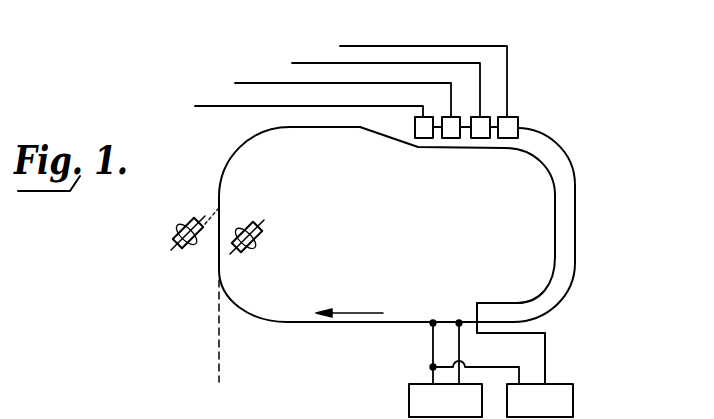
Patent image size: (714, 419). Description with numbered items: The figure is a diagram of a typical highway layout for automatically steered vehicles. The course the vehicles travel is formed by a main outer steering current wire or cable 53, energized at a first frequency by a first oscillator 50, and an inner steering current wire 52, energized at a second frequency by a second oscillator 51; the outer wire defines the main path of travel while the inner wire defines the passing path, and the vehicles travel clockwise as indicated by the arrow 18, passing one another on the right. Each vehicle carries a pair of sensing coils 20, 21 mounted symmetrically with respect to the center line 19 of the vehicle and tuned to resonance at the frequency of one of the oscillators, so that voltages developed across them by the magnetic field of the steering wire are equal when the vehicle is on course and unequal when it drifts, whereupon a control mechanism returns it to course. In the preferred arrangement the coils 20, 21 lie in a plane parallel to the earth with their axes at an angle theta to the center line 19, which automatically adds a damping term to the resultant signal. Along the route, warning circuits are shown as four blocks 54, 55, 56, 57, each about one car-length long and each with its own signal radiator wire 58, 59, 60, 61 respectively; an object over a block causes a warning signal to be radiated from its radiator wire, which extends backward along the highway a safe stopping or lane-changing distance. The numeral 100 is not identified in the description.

The arrow 18 is at (355, 312).
The center line 19 is at (219, 342).
The sensing coil 20 is at (258, 225).
The sensing coil 21 is at (190, 220).
The first oscillator 50 is at (409, 395).
The second oscillator 51 is at (575, 397).
The inner steering current wire 52 is at (553, 238).
The main outer steering current wire 53 is at (577, 228).
The block 54 is at (518, 118).
The block 55 is at (483, 117).
The block 56 is at (453, 117).
The block 57 is at (424, 117).
The signal radiator wire 58 is at (342, 46).
The signal radiator wire 59 is at (292, 63).
The signal radiator wire 60 is at (235, 83).
The signal radiator wire 61 is at (195, 106).
The apparatus 100 is at (341, 412).